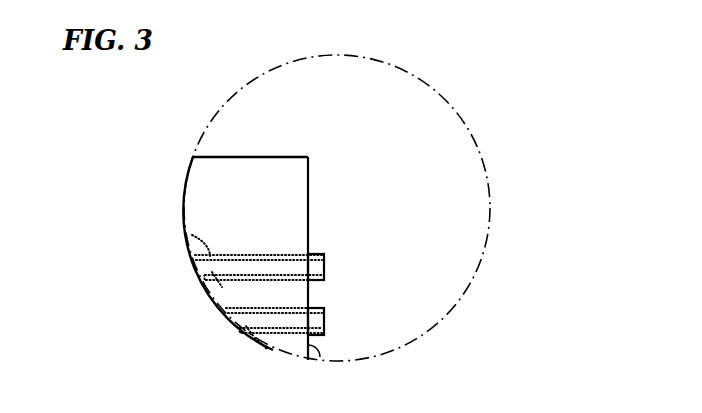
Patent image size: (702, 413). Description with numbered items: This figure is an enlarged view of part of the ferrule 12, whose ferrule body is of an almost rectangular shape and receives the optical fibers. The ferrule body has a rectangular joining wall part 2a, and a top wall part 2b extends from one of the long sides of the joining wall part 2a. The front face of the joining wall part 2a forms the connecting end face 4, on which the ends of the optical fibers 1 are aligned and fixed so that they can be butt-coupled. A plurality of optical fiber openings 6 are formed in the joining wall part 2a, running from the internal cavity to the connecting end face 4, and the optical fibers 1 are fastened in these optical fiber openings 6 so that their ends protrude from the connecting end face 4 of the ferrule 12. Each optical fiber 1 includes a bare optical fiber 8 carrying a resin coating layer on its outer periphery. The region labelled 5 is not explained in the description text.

The optical fiber 1 is at (326, 268).
The joining wall part 2a is at (310, 211).
The top wall part 2b is at (273, 157).
The connecting end face 4 is at (310, 187).
The corner portion 5 is at (320, 357).
The optical fiber opening 6 is at (200, 272).
The bare optical fiber 8 is at (192, 238).
The ferrule 12 is at (302, 141).